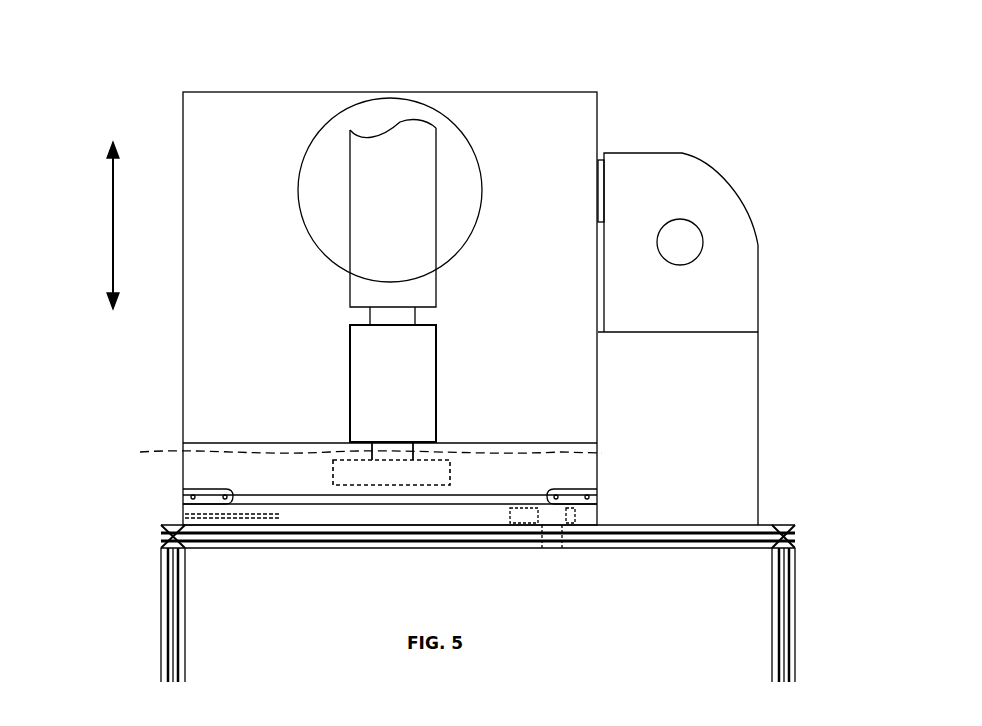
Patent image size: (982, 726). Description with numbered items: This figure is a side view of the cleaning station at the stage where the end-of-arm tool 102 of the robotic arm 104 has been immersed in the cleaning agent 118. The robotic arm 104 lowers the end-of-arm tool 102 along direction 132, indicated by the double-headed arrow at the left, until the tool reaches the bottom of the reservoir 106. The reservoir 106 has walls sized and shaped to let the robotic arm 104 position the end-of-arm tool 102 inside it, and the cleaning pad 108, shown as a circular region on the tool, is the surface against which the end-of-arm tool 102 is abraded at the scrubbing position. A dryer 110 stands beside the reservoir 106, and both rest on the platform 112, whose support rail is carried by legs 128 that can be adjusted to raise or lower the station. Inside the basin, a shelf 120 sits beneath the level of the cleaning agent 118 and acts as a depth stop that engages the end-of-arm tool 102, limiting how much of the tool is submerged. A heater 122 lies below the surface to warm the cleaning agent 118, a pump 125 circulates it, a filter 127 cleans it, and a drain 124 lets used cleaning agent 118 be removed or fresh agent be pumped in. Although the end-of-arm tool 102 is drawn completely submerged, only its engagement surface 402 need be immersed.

The end-of-arm tool 102 is at (333, 470).
The robotic arm 104 is at (350, 290).
The reservoir 106 is at (598, 100).
The cleaning pad 108 is at (450, 120).
The dryer 110 is at (732, 190).
The platform 112 is at (796, 526).
The cleaning agent 118 is at (190, 451).
The shelf 120 is at (326, 505).
The heater 122 is at (254, 516).
The drain 124 is at (565, 530).
The pump 125 is at (523, 524).
The filter 127 is at (576, 515).
The legs 128 is at (161, 641).
The direction 132 is at (115, 216).
The engagement surface 402 is at (402, 486).